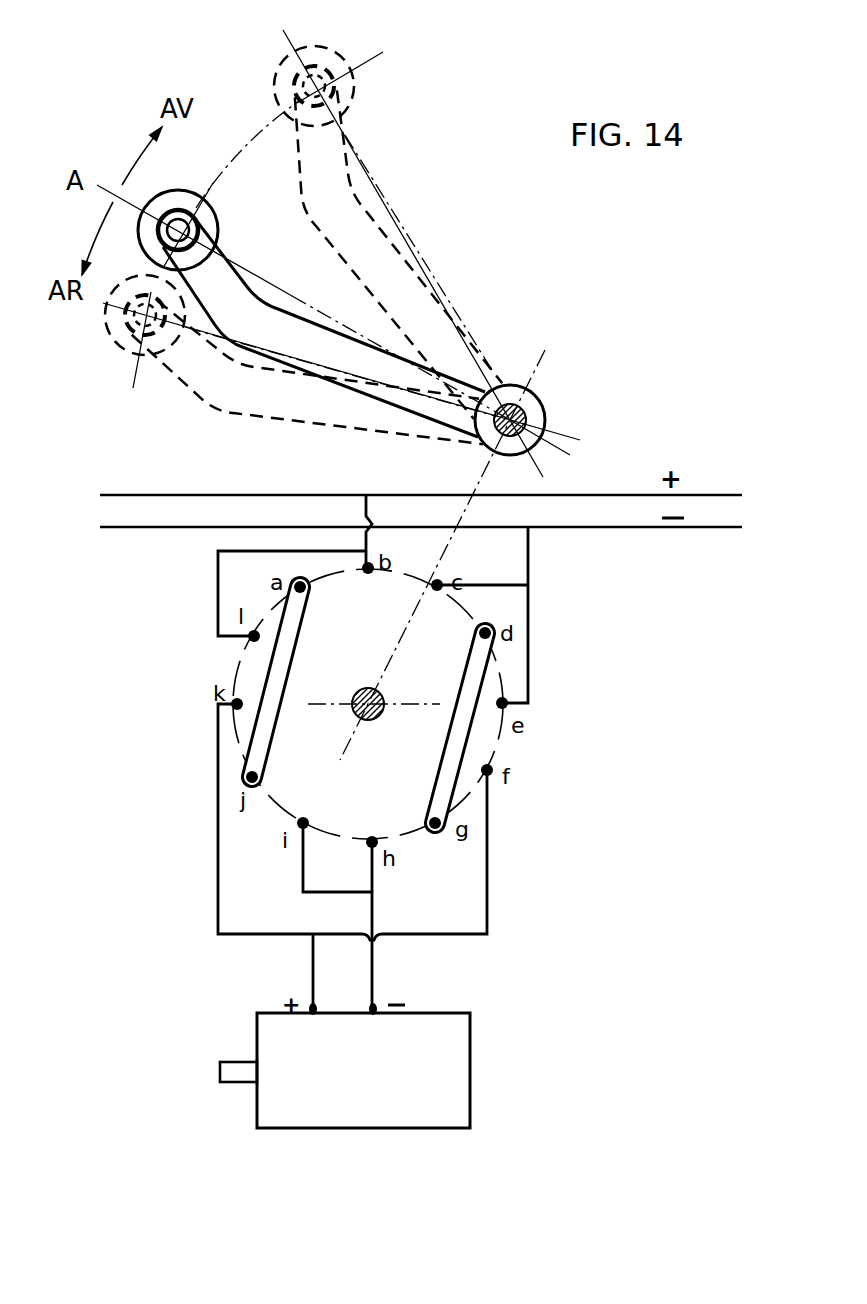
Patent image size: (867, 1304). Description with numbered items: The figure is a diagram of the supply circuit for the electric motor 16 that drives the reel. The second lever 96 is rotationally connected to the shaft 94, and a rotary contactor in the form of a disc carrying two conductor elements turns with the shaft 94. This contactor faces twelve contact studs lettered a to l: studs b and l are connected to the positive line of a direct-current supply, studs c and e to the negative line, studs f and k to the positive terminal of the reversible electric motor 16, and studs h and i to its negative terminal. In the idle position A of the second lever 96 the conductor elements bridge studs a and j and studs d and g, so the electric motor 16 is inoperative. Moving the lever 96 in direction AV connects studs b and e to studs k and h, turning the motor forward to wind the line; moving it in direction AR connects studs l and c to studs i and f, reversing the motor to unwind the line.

The shaft 94 is at (529, 420).
The second lever 96 is at (313, 332).
The electric motor 16 is at (452, 1057).